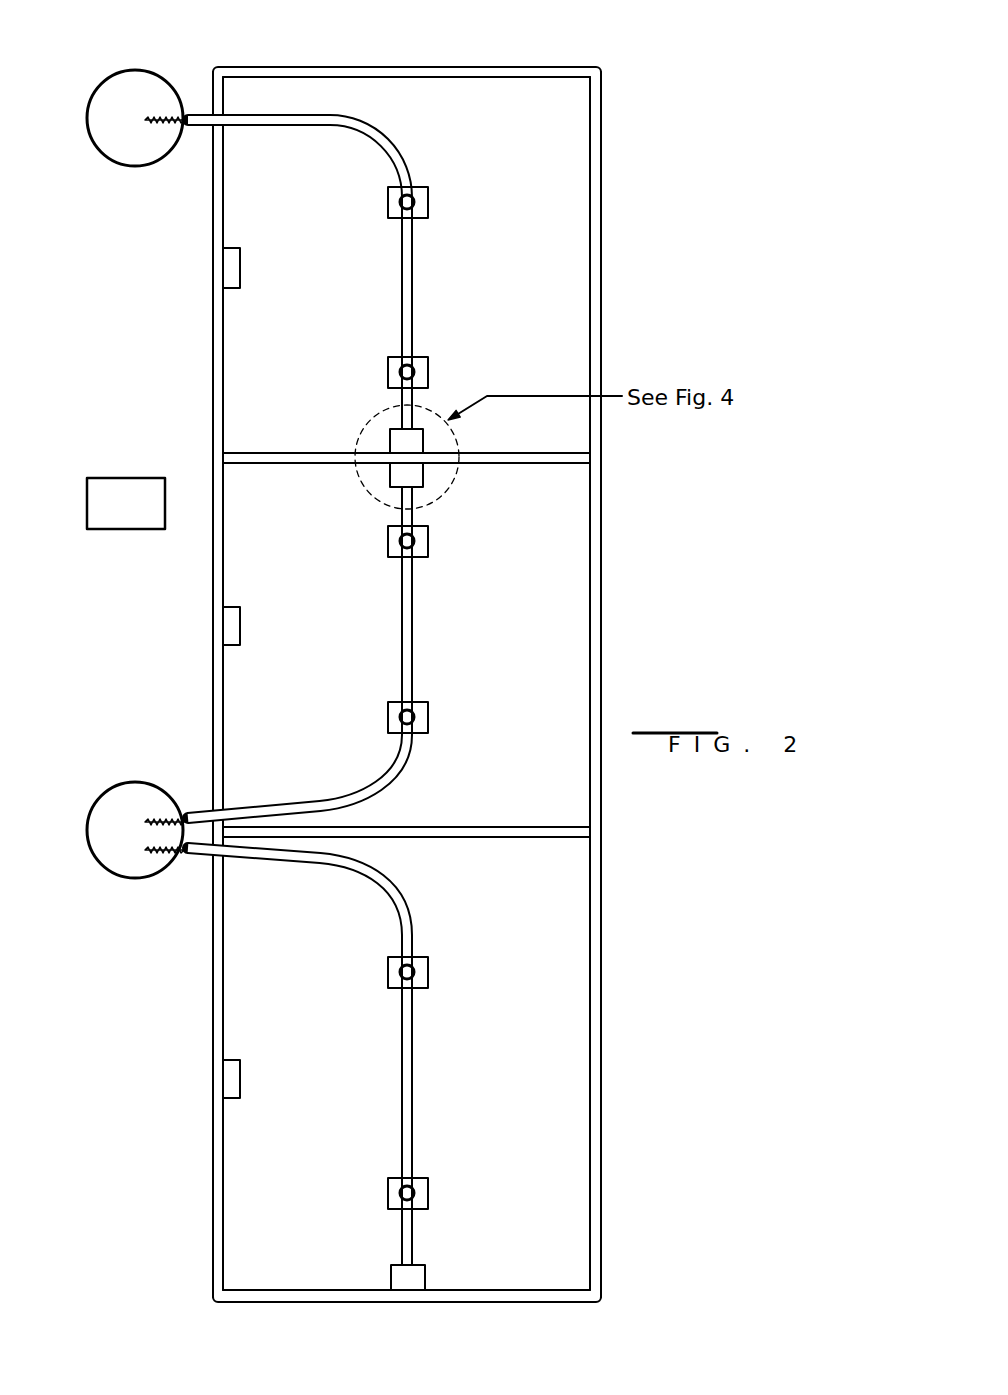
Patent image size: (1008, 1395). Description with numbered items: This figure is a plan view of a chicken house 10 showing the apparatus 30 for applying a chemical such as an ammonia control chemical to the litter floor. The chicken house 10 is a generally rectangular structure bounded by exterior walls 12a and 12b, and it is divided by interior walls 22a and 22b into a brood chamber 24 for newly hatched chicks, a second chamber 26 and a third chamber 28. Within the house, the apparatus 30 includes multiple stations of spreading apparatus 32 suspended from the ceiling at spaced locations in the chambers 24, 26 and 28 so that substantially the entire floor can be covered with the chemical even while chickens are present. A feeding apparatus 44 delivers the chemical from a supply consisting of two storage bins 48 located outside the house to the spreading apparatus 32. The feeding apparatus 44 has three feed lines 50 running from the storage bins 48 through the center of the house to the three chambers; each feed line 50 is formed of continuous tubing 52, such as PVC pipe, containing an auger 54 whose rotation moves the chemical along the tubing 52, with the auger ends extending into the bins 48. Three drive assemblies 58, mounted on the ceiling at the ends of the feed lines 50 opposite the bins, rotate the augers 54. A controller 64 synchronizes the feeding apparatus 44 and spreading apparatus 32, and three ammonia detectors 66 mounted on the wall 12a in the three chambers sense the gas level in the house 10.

The chicken house 10 is at (391, 685).
The exterior wall 12a is at (601, 1160).
The exterior wall 12b is at (483, 65).
The interior wall 22a is at (310, 453).
The interior wall 22b is at (553, 840).
The brood chamber 24 is at (530, 983).
The second chamber 26 is at (530, 632).
The third chamber 28 is at (547, 325).
The apparatus for applying a chemical 30 is at (162, 1062).
The spreading apparatus 32 is at (429, 199).
The feeding apparatus 44 is at (349, 646).
The storage bin 48 is at (140, 167).
The feed line 50 is at (413, 260).
The tubing 52 is at (287, 113).
The auger 54 is at (158, 112).
The drive assembly 58 is at (392, 430).
The controller 64 is at (125, 529).
The ammonia detector 66 is at (240, 268).